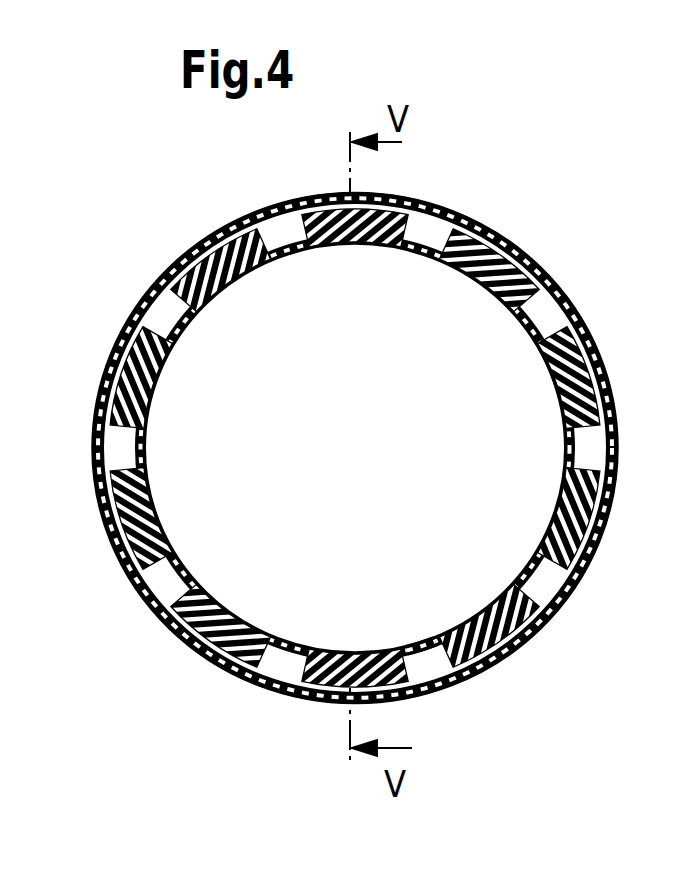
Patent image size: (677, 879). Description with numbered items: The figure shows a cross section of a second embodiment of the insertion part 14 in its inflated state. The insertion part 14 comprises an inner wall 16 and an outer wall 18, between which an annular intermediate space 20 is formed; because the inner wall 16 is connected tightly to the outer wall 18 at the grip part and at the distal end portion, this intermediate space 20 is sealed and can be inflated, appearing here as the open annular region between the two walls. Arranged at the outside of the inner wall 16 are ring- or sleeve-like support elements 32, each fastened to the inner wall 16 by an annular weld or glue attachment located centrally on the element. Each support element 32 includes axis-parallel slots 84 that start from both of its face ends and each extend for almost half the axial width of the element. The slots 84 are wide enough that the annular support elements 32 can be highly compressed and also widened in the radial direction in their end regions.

The insertion part 14 is at (531, 195).
The inner wall 16 is at (355, 448).
The outer wall 18 is at (362, 448).
The annular intermediate space 20 is at (384, 447).
The support element 32 is at (549, 516).
The slot 84 is at (429, 610).